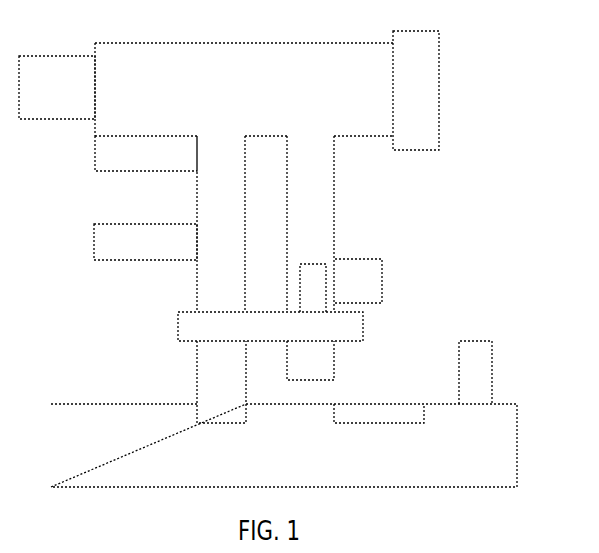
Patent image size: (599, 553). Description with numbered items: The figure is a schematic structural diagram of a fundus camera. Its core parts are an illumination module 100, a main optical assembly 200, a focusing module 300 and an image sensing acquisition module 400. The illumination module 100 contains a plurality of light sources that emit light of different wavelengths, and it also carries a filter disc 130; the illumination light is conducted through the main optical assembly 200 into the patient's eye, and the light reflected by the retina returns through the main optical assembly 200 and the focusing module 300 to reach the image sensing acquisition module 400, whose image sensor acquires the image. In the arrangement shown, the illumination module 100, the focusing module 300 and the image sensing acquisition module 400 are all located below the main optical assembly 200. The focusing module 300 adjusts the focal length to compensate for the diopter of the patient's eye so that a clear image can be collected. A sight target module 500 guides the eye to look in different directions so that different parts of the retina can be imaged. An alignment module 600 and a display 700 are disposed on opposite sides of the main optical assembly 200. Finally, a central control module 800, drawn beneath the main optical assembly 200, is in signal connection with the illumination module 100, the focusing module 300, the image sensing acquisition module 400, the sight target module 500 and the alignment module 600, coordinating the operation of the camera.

The illumination module 100 is at (208, 393).
The filter disc 130 is at (202, 325).
The main optical assembly 200 is at (135, 53).
The focusing module 300 is at (313, 273).
The image sensing acquisition module 400 is at (333, 375).
The sight target module 500 is at (378, 287).
The alignment module 600 is at (24, 54).
The display 700 is at (415, 45).
The central control module 800 is at (100, 163).